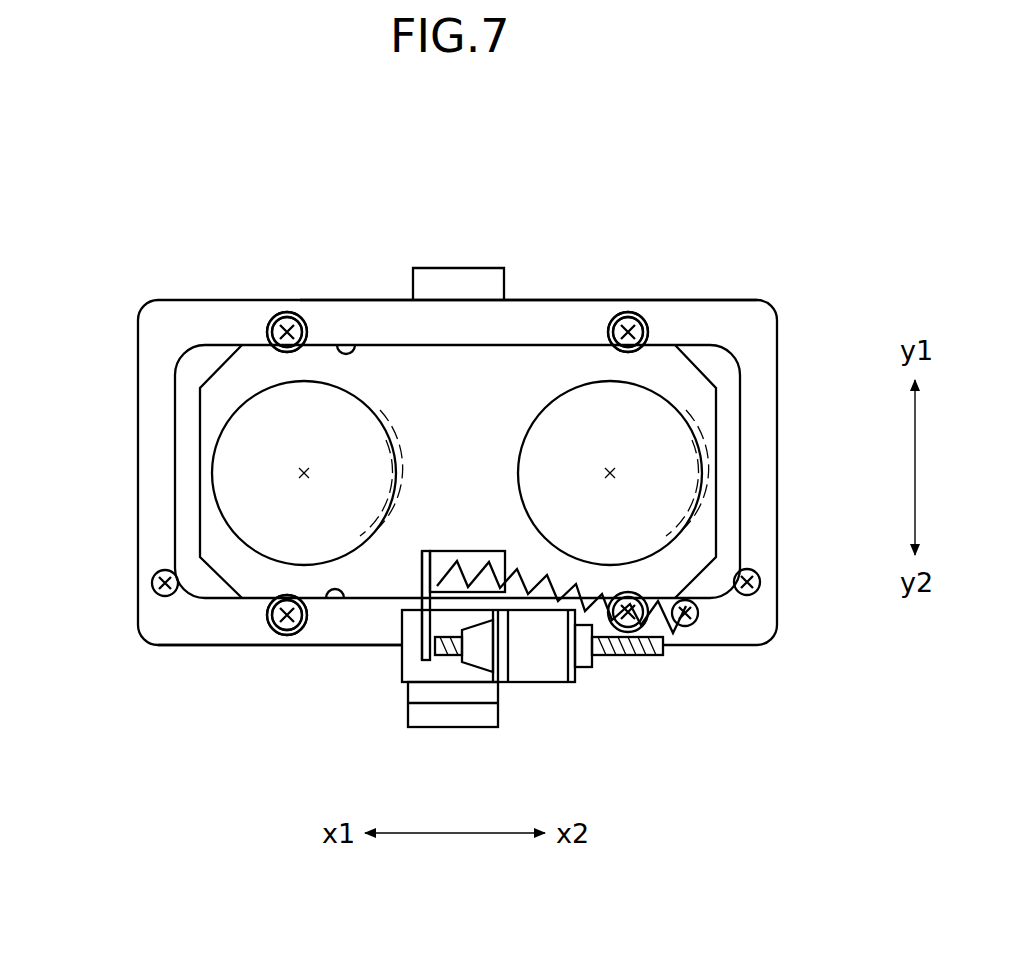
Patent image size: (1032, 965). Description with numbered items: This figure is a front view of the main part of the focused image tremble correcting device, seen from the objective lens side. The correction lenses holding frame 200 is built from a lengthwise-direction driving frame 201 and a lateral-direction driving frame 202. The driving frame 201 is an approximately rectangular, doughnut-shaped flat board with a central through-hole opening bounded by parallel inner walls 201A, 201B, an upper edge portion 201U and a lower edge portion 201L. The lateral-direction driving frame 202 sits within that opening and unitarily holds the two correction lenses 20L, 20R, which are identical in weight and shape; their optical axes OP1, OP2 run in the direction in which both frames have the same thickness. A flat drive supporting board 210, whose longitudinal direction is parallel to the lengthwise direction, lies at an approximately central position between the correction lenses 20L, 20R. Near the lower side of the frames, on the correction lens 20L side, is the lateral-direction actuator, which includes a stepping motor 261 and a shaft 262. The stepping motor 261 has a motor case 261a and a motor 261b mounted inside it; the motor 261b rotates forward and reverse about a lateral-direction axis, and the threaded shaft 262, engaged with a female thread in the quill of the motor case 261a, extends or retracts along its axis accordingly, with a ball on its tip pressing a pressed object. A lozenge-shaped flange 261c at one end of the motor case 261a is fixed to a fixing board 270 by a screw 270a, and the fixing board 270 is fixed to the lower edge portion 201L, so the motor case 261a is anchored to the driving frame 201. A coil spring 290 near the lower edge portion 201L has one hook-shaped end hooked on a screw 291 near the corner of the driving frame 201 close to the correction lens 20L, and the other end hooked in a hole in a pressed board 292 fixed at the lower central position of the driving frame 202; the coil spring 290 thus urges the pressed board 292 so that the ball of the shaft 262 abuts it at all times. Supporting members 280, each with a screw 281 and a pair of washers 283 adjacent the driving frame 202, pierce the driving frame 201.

The correction lenses holding frame 200 is at (807, 277).
The lengthwise-direction driving frame 201 is at (780, 328).
The upper edge portion of the driving frame 201U is at (535, 318).
The lower edge portion of the driving frame 201L is at (372, 642).
The inner wall 201A is at (350, 340).
The inner wall 201B is at (333, 600).
The lateral-direction driving frame 202 is at (725, 365).
The drive supporting board 210 is at (462, 268).
The correction lens 20R is at (233, 437).
The correction lens 20L is at (690, 420).
The optical axis OP1 is at (614, 474).
The optical axis OP2 is at (300, 475).
The supporting member 280 is at (237, 335).
The screw 281 is at (273, 318).
The washers 283 is at (288, 310).
The coil spring 290 is at (487, 565).
The screw 291 is at (685, 628).
The pressed board 292 is at (440, 560).
The stepping motor 261 is at (584, 683).
The motor case 261a is at (567, 665).
The motor 261b is at (478, 665).
The flange 261c is at (507, 675).
The shaft 262 is at (440, 657).
The fixing board 270 is at (400, 675).
The screw 270a is at (527, 600).